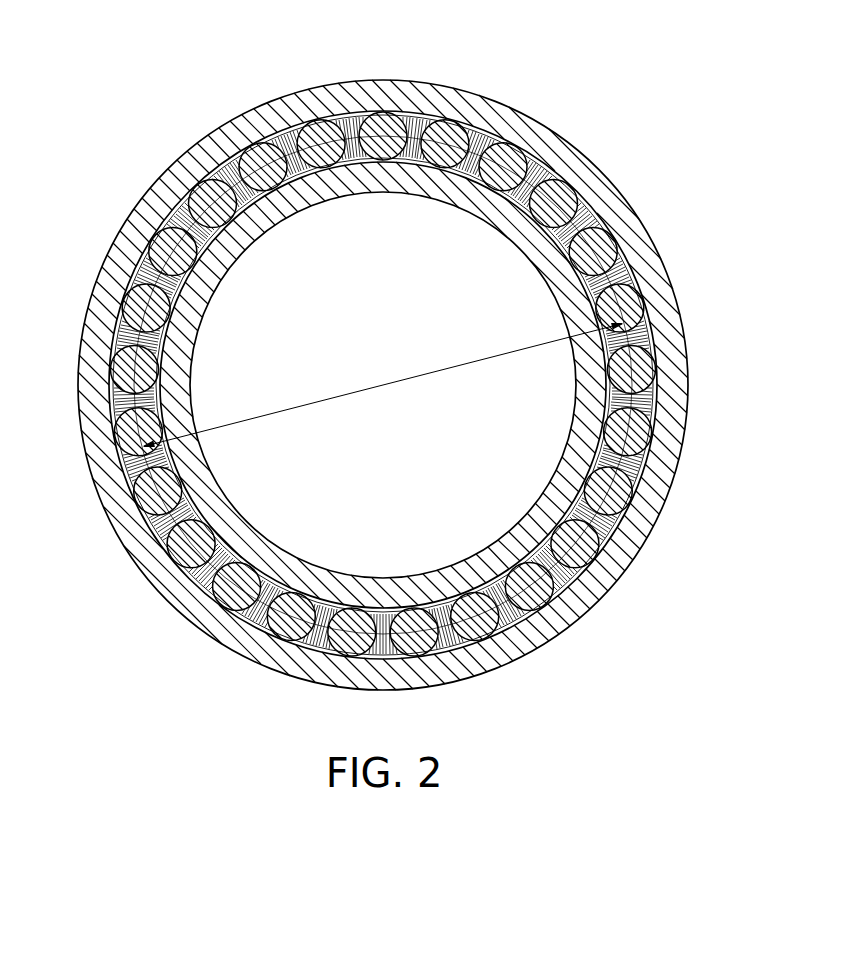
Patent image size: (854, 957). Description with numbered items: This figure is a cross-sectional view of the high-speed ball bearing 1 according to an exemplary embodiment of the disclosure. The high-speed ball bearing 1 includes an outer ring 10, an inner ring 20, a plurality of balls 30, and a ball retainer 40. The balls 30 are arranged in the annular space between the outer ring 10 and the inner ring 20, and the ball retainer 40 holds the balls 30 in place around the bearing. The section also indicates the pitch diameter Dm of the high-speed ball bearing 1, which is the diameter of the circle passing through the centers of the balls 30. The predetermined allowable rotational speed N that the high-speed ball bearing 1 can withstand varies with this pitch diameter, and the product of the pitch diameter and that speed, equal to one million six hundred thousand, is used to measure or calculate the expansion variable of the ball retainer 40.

The high-speed ball bearing 1 is at (661, 51).
The outer ring 10 is at (612, 184).
The inner ring 20 is at (500, 235).
The balls 30 is at (494, 130).
The ball retainer 40 is at (540, 172).